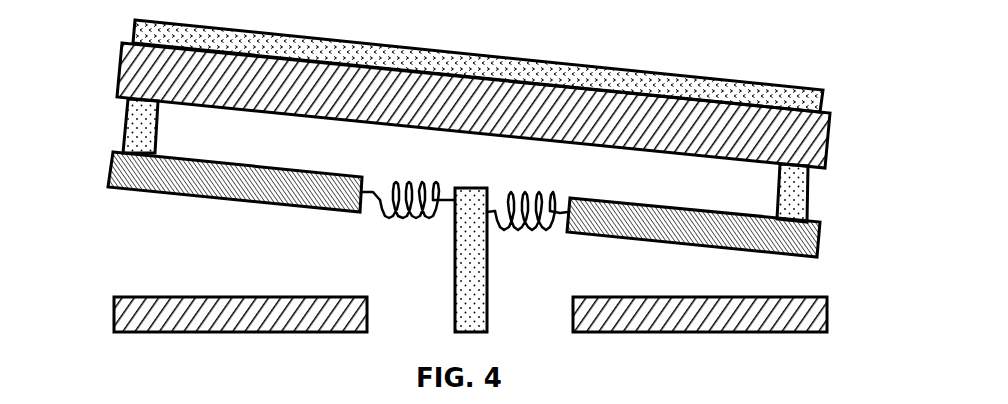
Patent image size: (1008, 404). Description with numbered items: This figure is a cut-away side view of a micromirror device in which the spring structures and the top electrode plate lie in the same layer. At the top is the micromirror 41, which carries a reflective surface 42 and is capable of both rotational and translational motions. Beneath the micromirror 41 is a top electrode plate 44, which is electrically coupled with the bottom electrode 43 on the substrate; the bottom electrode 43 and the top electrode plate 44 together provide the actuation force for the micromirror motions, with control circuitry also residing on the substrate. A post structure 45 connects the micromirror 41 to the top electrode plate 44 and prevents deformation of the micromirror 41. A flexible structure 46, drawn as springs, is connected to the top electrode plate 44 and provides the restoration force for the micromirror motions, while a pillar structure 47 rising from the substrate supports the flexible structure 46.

The micromirror 41 is at (817, 143).
The reflective surface 42 is at (748, 90).
The bottom electrode 43 is at (812, 318).
The top electrode plate 44 is at (145, 177).
The post structure 45 is at (123, 137).
The flexible structure 46 is at (380, 212).
The pillar structure 47 is at (489, 287).